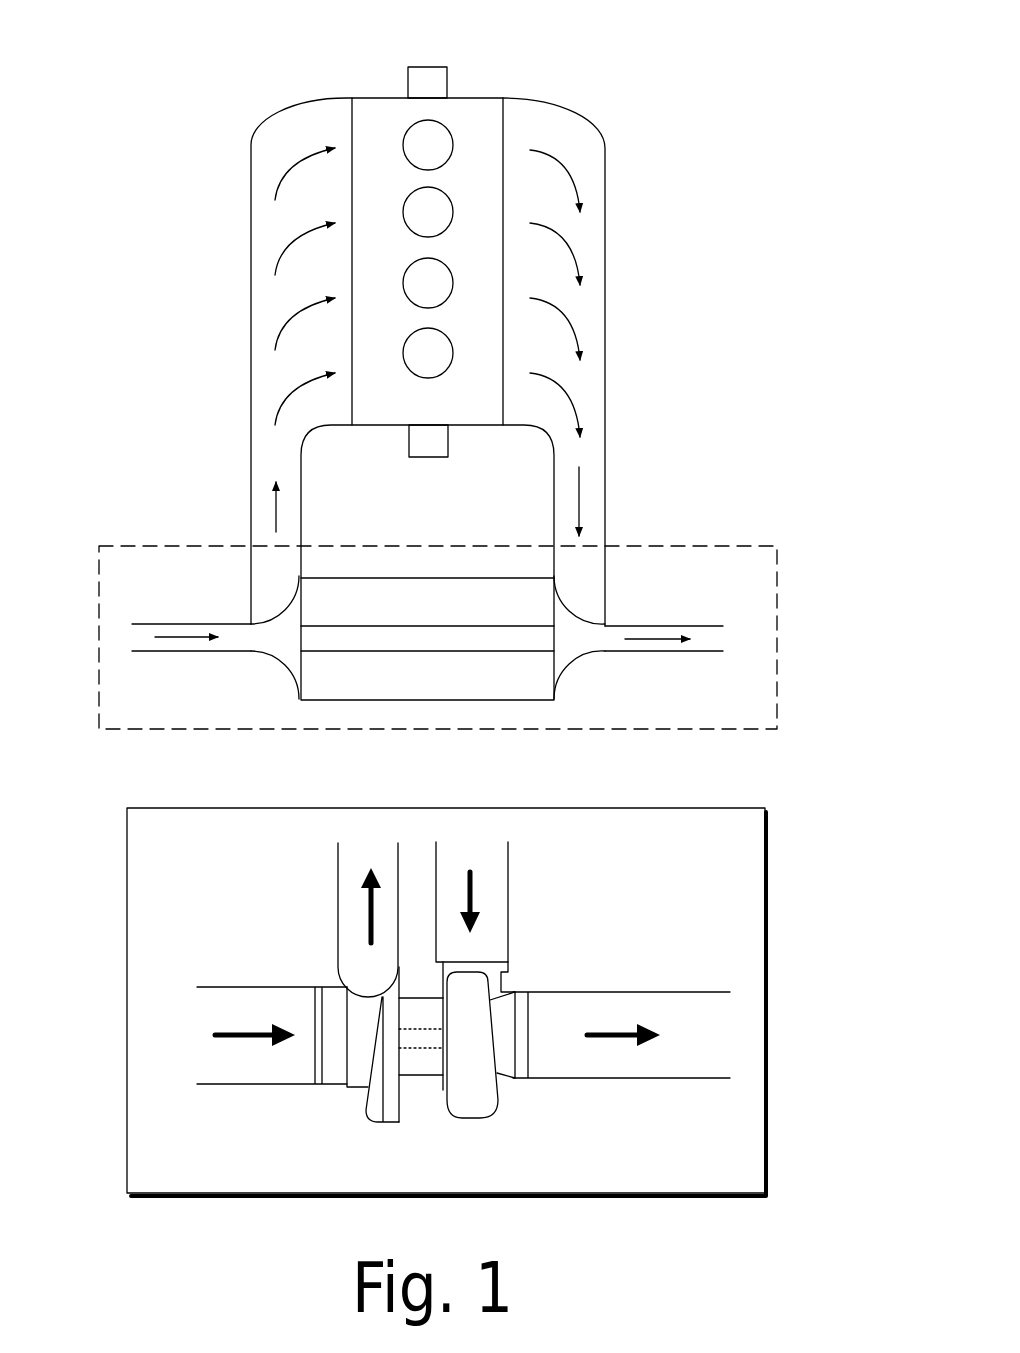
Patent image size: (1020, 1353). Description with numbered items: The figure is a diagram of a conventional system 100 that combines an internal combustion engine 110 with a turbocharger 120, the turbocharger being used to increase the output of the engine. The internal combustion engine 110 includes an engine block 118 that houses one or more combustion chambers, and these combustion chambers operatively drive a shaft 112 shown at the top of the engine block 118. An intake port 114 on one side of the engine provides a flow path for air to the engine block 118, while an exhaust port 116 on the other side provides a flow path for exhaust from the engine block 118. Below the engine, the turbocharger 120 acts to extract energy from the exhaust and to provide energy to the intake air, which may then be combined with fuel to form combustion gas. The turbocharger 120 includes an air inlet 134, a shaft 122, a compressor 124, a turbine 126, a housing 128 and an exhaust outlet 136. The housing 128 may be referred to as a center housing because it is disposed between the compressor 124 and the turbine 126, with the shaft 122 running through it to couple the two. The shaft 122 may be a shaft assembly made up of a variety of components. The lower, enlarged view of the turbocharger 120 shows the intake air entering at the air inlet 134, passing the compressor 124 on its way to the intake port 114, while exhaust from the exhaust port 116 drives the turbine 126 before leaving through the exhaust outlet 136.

The system 100 is at (603, 18).
The internal combustion engine 110 is at (390, 98).
The shaft 112 is at (430, 67).
The intake port 114 is at (275, 118).
The exhaust port 116 is at (598, 130).
The engine block 118 is at (447, 416).
The turbocharger 120 is at (667, 546).
The shaft 122 is at (427, 652).
The compressor 124 is at (280, 662).
The turbine 126 is at (577, 658).
The housing 128 is at (447, 610).
The air inlet 134 is at (210, 624).
The exhaust outlet 136 is at (667, 626).